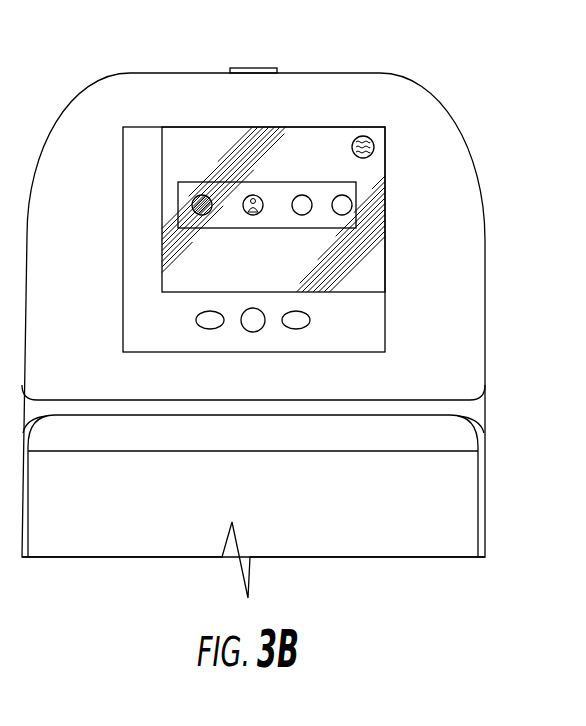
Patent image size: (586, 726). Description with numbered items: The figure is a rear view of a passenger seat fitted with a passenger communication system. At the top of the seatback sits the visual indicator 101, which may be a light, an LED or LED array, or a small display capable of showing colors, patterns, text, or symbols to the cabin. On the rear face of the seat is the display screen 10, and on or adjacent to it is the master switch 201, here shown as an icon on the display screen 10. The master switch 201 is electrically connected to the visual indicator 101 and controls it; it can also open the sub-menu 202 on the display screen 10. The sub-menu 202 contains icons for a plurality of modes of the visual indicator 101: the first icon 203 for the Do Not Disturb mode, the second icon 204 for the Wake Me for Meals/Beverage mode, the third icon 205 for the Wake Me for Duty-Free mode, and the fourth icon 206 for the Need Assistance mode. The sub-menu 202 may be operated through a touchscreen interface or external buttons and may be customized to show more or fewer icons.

The visual indicator 101 is at (257, 68).
The display screen 10 is at (230, 284).
The master switch 201 is at (351, 136).
The sub-menu 202 is at (278, 229).
The first icon 203 is at (192, 203).
The second icon 204 is at (247, 194).
The third icon 205 is at (313, 200).
The fourth icon 206 is at (349, 212).